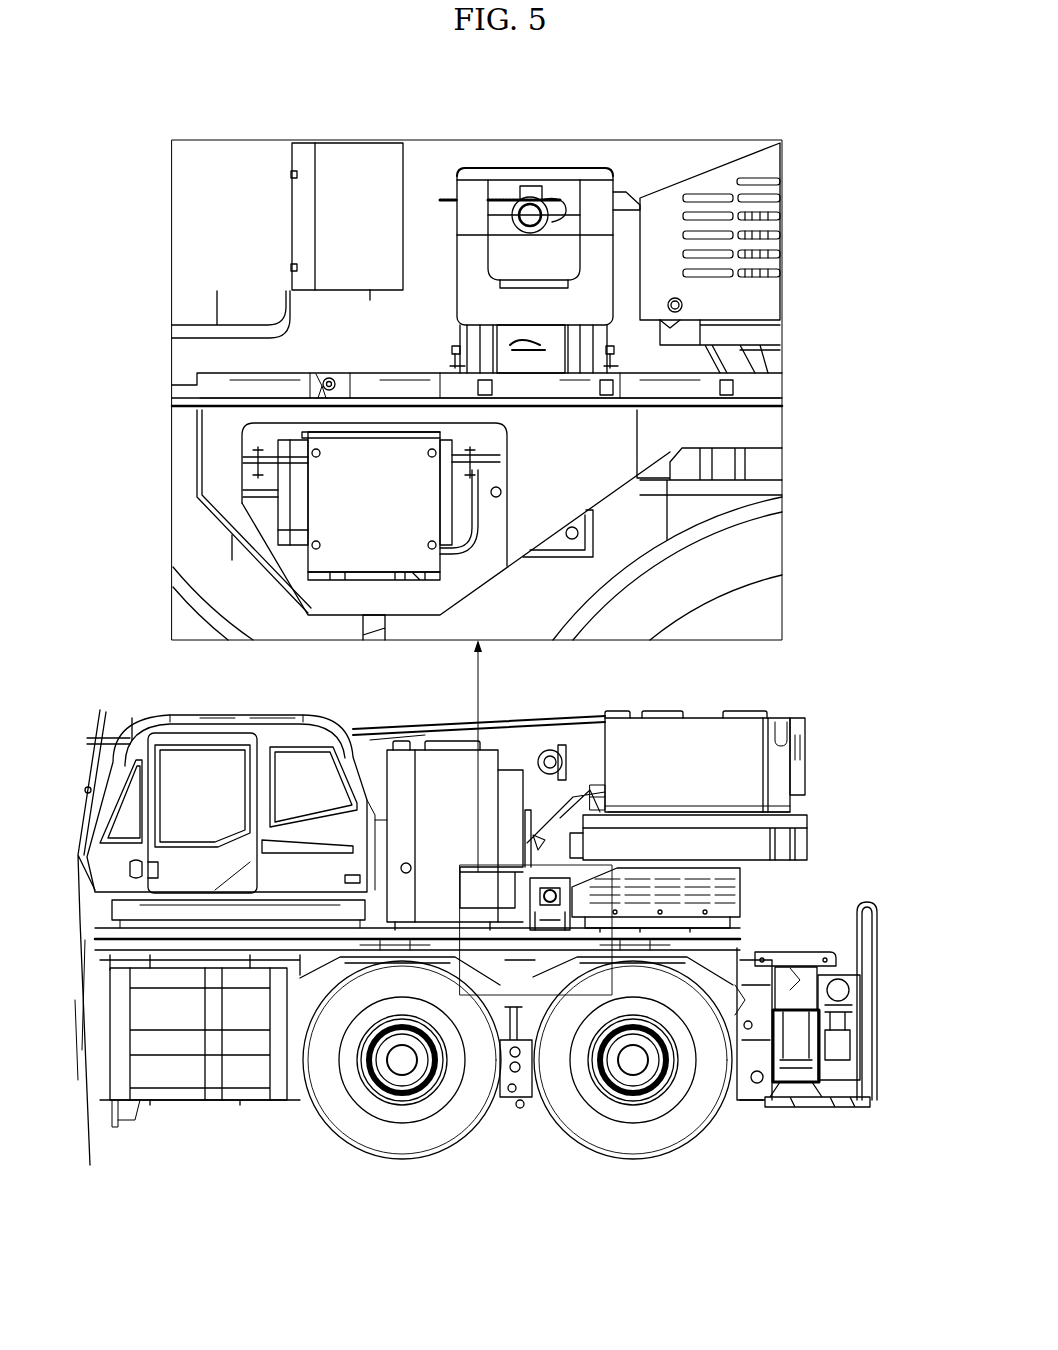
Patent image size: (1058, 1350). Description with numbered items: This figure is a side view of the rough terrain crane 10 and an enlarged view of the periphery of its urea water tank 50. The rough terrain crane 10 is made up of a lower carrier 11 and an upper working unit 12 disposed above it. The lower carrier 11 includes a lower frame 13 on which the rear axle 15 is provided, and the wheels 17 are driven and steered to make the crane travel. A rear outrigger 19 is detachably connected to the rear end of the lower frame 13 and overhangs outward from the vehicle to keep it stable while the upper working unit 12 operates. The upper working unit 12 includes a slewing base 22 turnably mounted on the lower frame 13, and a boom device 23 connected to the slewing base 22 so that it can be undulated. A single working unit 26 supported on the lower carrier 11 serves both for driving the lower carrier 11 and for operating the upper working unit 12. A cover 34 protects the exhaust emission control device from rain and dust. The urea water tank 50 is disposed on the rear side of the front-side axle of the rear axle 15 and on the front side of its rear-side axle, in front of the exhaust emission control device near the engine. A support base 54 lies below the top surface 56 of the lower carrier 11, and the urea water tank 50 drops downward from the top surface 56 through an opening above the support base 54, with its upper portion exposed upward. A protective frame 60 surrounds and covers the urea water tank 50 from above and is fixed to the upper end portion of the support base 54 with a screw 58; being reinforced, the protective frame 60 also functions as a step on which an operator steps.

The rough terrain crane 10 is at (147, 701).
The lower carrier 11 is at (895, 974).
The upper working unit 12 is at (822, 746).
The lower frame 13 is at (766, 429).
The rear axle 15 is at (531, 1108).
The wheel 17 is at (453, 1123).
The rear outrigger 19 is at (831, 1120).
The slewing base 22 is at (807, 842).
The boom device 23 is at (352, 725).
The working unit 26 is at (265, 738).
The cover 34 is at (766, 299).
The urea water tank 50 is at (534, 158).
The support base 54 is at (499, 498).
The top surface 56 is at (375, 395).
The screw 58 is at (455, 350).
The protective frame 60 is at (621, 164).